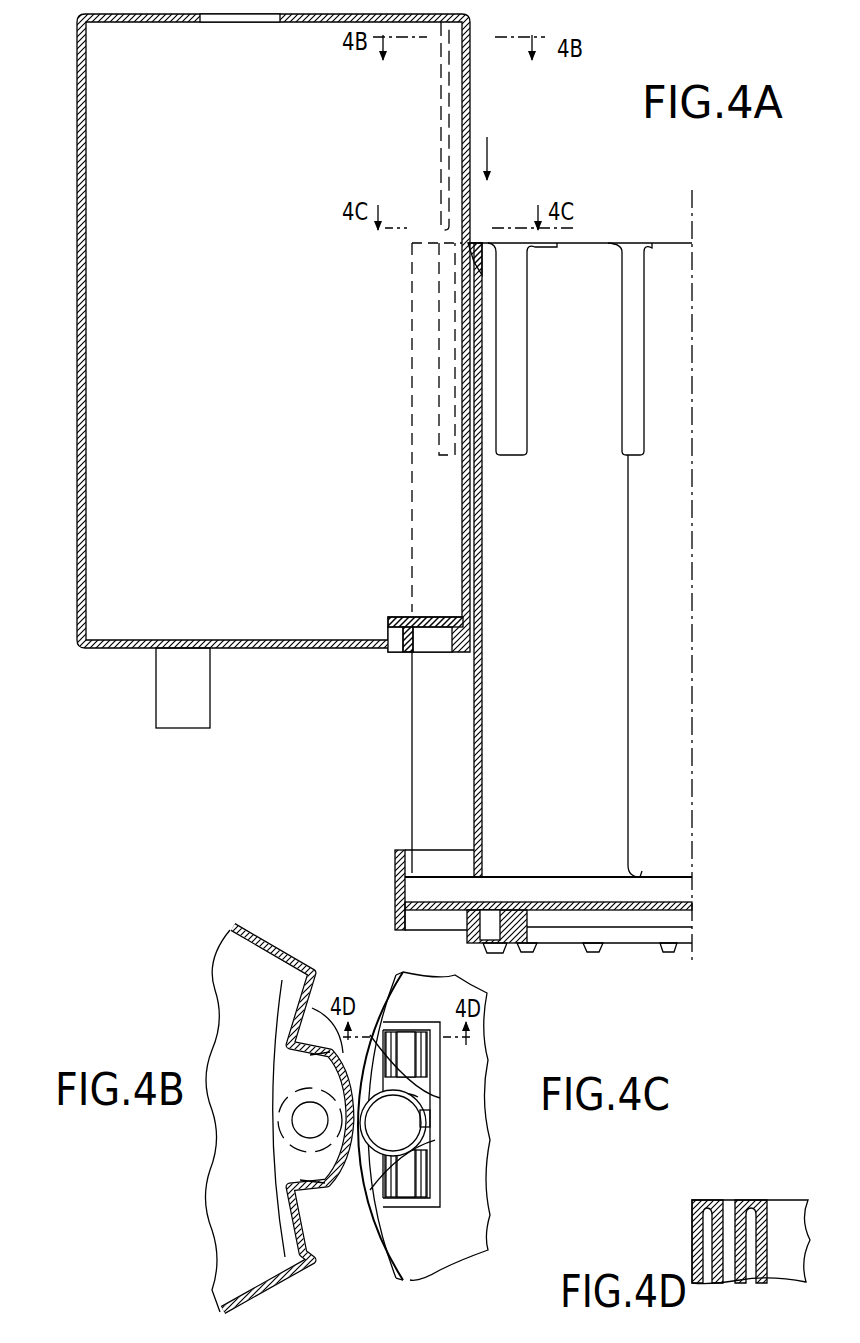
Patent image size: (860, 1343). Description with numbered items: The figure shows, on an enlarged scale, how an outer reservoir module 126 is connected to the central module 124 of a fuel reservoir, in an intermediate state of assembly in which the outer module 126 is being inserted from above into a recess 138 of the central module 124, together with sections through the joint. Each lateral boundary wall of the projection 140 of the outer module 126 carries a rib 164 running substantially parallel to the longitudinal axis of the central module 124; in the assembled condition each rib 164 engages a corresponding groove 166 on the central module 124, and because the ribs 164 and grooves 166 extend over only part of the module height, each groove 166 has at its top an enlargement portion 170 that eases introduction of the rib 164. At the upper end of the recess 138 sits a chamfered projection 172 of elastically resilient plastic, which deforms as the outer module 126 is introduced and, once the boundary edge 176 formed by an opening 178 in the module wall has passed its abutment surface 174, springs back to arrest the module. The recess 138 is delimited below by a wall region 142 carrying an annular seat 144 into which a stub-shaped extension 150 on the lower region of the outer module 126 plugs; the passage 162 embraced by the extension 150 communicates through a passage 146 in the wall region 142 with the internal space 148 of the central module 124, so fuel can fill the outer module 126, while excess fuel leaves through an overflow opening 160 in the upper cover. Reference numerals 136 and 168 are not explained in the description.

In FIG. 4A, the central module 124 is at (490, 743).
In FIG. 4B, the central module 124 is at (388, 990).
In FIG. 4C, the central module 124 is at (473, 1217).
In FIG. 4A, the outer module 126 is at (78, 458).
In FIG. 4B, the outer module 126 is at (222, 1190).
In FIG. 4C, the rim 136 is at (393, 1278).
In FIG. 4A, the recess 138 is at (432, 790).
In FIG. 4C, the recess 138 is at (355, 1175).
In FIG. 4B, the projection 140 is at (310, 1008).
In FIG. 4A, the wall region 142 is at (433, 902).
In FIG. 4C, the wall region 142 is at (393, 1073).
In FIG. 4A, the annular seat 144 is at (418, 857).
In FIG. 4C, the annular seat 144 is at (417, 1097).
In FIG. 4A, the passage 146 is at (477, 890).
In FIG. 4A, the internal space 148 is at (575, 676).
In FIG. 4A, the stub-shaped extension 150 is at (403, 650).
In FIG. 4A, the overflow opening 160 is at (233, 18).
In FIG. 4A, the passage 162 is at (418, 632).
In FIG. 4B, the passage 162 is at (300, 1120).
In FIG. 4A, the rib 164 is at (447, 183).
In FIG. 4B, the rib 164 is at (305, 1062).
In FIG. 4A, the groove 166 is at (438, 296).
In FIG. 4C, the groove 166 is at (405, 1045).
In FIG. 4D, the groove 166 is at (727, 1227).
In FIG. 4C, the frame 168 is at (415, 1028).
In FIG. 4D, the frame 168 is at (780, 1225).
In FIG. 4D, the enlargement portion 170 is at (730, 1200).
In FIG. 4A, the chamfered projection 172 is at (468, 260).
In FIG. 4C, the chamfered projection 172 is at (425, 1115).
In FIG. 4A, the abutment surface 174 is at (477, 283).
In FIG. 4A, the boundary edge 176 is at (470, 40).
In FIG. 4B, the boundary edge 176 is at (335, 1123).
In FIG. 4A, the opening 178 is at (470, 33).